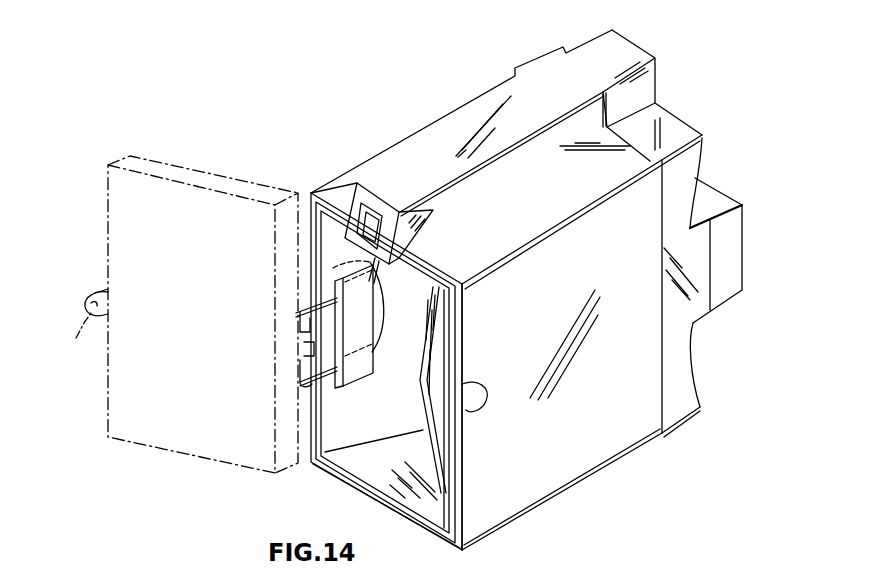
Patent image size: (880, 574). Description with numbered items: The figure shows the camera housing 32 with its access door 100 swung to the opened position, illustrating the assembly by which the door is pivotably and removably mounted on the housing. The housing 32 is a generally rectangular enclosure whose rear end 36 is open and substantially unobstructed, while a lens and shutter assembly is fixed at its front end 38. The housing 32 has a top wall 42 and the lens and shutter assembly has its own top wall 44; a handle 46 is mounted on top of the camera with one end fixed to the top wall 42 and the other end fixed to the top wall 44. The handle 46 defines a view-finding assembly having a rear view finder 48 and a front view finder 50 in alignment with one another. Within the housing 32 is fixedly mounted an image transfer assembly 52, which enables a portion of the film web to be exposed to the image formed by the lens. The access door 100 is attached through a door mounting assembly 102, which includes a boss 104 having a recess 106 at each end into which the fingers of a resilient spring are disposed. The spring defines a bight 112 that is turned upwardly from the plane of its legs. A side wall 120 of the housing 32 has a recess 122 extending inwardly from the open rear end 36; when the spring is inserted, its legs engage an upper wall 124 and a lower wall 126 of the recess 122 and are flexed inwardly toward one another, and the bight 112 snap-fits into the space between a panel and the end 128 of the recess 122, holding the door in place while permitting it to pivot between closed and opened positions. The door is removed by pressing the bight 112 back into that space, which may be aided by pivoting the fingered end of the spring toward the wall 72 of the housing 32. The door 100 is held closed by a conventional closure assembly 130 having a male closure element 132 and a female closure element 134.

The housing 32 is at (544, 508).
The rear end 36 is at (421, 525).
The front end 38 is at (662, 404).
The top wall 42 is at (540, 221).
The top wall 44 is at (650, 140).
The handle 46 is at (500, 126).
The rear view finder 48 is at (372, 218).
The front view finder 50 is at (648, 87).
The image transfer assembly 52 is at (421, 436).
The wall 72 is at (575, 287).
The access door 100 is at (172, 455).
The door mounting assembly 102 is at (357, 381).
The boss 104 is at (305, 348).
The recess 106 is at (303, 316).
The bight 112 is at (379, 322).
The side wall 120 is at (333, 230).
The recess 122 is at (382, 343).
The upper wall 124 is at (310, 293).
The lower wall 126 is at (326, 390).
The end 128 is at (378, 264).
The closure assembly 130 is at (93, 292).
The male closure element 132 is at (66, 337).
The female closure element 134 is at (478, 408).